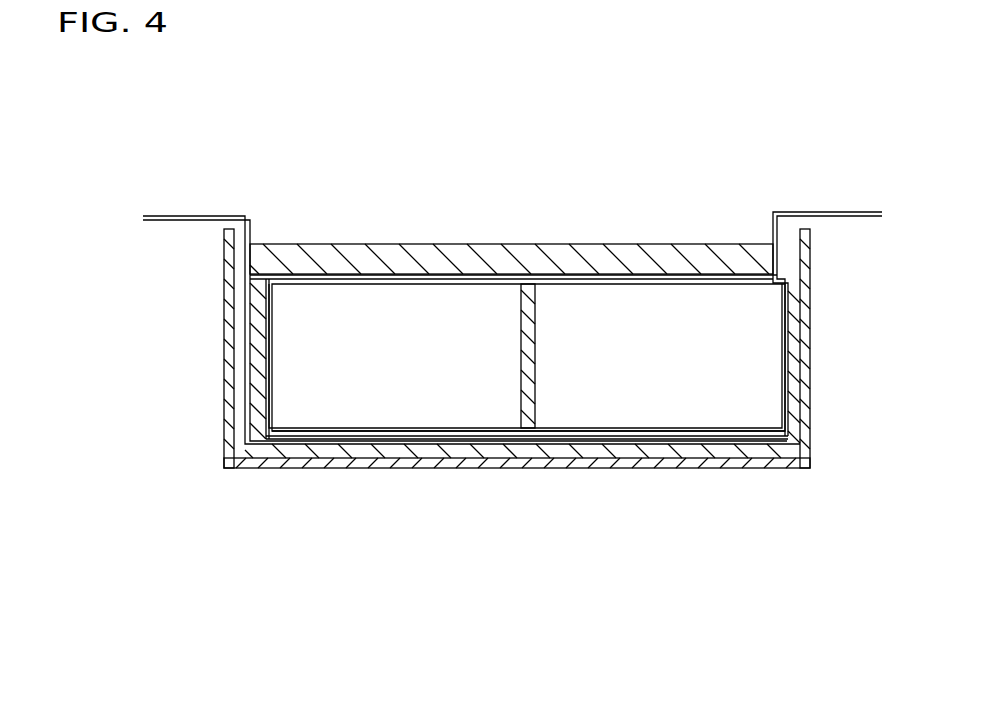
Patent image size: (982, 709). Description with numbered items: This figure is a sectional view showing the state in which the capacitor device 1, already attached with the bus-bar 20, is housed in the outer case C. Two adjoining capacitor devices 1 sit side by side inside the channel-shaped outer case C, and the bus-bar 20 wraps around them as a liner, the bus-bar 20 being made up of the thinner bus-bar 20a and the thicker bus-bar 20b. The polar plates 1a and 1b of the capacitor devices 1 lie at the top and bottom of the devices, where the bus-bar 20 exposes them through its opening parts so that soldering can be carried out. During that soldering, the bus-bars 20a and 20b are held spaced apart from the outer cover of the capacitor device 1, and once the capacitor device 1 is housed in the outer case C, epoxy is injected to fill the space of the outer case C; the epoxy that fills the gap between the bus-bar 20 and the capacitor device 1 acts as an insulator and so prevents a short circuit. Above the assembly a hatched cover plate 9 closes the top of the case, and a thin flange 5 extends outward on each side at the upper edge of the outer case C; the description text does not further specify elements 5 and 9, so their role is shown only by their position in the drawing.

The capacitor device 1 is at (560, 357).
The polar plate 1a is at (452, 273).
The polar plate 1b is at (393, 442).
The flange 5 is at (222, 213).
The top cover plate 9 is at (337, 257).
The bus-bar 20 is at (440, 311).
The bus-bar 20a is at (561, 275).
The bus-bar 20b is at (247, 354).
The outer case C is at (700, 462).